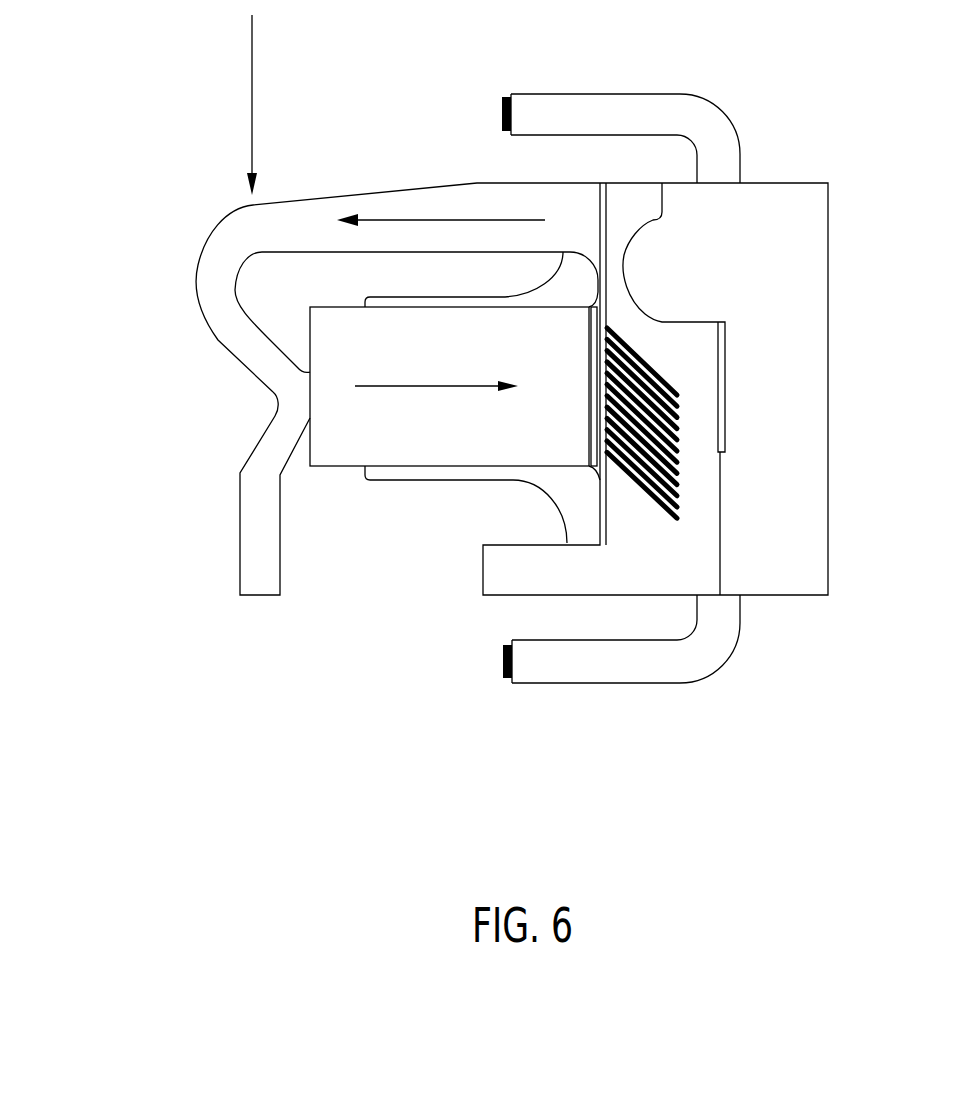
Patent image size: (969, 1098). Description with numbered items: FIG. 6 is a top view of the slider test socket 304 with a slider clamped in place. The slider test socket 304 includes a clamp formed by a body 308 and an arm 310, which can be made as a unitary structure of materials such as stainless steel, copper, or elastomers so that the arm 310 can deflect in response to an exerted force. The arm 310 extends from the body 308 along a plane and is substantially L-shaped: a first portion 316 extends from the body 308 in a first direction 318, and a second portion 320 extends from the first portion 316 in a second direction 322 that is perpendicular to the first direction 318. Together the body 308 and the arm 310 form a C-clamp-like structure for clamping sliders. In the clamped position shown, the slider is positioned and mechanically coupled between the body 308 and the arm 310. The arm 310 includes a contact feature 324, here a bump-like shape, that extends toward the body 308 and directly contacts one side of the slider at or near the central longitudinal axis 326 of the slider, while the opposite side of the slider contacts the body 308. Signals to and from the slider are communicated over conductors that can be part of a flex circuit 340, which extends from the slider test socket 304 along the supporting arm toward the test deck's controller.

The slider test socket 304 is at (124, 148).
The body 308 is at (817, 315).
The arm 310 is at (415, 198).
The first portion 316 is at (308, 212).
The first direction 318 is at (483, 220).
The second portion 320 is at (217, 312).
The second direction 322 is at (251, 102).
The contact feature 324 is at (282, 390).
The central longitudinal axis 326 is at (437, 388).
The flex circuit 340 is at (632, 672).